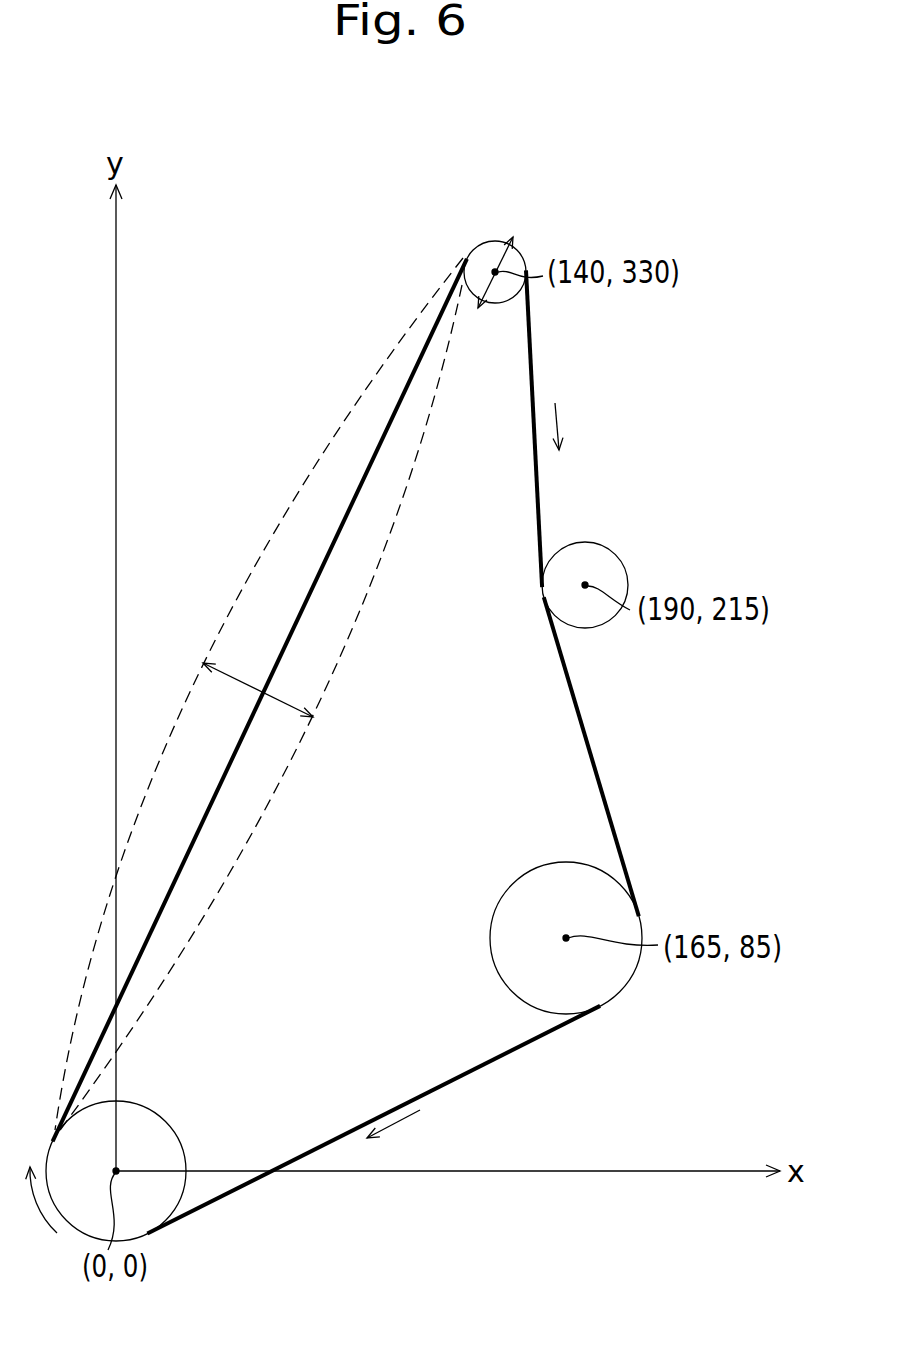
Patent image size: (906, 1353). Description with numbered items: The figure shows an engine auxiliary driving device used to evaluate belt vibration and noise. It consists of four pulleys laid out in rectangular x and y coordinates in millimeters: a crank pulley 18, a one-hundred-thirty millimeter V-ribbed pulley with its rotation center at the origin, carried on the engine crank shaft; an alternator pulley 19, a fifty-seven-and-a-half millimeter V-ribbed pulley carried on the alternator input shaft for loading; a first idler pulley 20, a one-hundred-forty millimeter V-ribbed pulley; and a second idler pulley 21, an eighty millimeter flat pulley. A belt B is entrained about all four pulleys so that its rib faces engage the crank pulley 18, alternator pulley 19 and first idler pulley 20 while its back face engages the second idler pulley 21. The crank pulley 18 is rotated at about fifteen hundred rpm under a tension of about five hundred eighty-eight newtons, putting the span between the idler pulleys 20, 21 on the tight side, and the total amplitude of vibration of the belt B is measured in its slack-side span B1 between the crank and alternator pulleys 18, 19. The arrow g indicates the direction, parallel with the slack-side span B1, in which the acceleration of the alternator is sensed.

The crank pulley 18 is at (157, 1122).
The alternator pulley 19 is at (484, 252).
The first idler pulley 20 is at (513, 905).
The second idler pulley 21 is at (597, 552).
The belt B is at (493, 1062).
The slack-side span B1 is at (403, 490).
The arrow indicating direction parallel with the belt slack-side span g is at (485, 300).